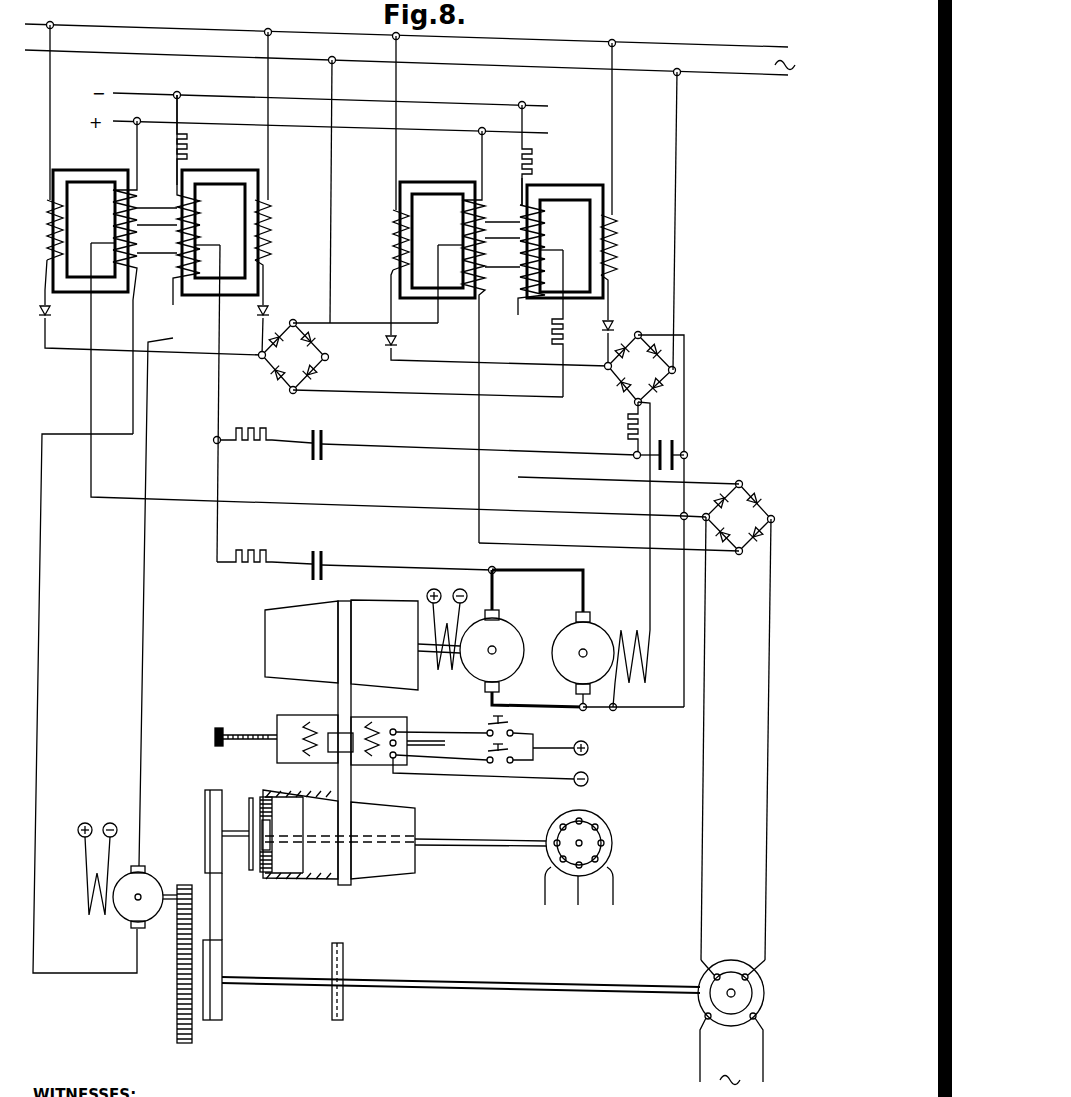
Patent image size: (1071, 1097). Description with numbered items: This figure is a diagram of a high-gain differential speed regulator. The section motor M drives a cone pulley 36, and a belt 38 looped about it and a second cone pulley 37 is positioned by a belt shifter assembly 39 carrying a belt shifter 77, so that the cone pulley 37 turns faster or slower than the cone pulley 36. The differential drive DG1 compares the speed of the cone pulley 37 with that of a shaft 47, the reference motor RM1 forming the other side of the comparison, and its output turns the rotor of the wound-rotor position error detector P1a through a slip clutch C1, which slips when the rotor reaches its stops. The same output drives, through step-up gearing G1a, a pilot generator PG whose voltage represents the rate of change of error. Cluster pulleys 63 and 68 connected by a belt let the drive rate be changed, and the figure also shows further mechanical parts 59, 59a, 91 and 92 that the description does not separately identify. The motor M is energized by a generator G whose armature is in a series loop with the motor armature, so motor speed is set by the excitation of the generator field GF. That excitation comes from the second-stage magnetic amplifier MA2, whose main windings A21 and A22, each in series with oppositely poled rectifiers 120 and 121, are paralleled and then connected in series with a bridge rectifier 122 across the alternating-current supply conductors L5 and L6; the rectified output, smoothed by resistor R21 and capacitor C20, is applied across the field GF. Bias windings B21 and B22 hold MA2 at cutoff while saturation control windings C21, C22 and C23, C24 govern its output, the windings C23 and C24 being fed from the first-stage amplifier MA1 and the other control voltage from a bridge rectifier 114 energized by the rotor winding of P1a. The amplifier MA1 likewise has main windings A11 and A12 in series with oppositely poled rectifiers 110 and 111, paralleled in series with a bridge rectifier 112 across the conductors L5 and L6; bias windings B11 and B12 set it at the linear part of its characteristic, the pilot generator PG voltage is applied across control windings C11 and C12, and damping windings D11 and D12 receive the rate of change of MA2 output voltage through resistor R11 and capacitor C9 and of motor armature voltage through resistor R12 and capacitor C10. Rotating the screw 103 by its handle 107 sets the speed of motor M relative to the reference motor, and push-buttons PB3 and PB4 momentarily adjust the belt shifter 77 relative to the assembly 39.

The cone pulley 36 is at (264, 620).
The cone pulley 37 is at (376, 880).
The belt 38 is at (337, 644).
The belt shifter assembly 39 is at (403, 711).
The shaft 47 is at (290, 830).
The shaft 59 is at (236, 838).
The shaft 59a is at (468, 982).
The pulley 63 is at (204, 803).
The pulley 68 is at (223, 956).
The belt shifter 77 is at (332, 732).
The spring 91 is at (310, 758).
The spring 92 is at (366, 758).
The screw 103 is at (255, 724).
The handle 107 is at (214, 736).
The rectifier 110 is at (266, 314).
The rectifier 111 is at (40, 306).
The bridge rectifier 112 is at (300, 362).
The bridge rectifier 114 is at (744, 516).
The rectifier 120 is at (612, 324).
The rectifier 121 is at (397, 342).
The bridge rectifier 122 is at (624, 367).
The supply conductor L5 is at (211, 30).
The supply conductor L6 is at (211, 58).
The magnetic amplifier MA1 is at (174, 183).
The magnetic amplifier MA2 is at (516, 195).
The main winding A12 is at (46, 232).
The bias winding B12 is at (112, 205).
The damping winding D12 is at (112, 232).
The control winding C12 is at (142, 342).
The control winding C11 is at (176, 268).
The bias winding B11 is at (200, 193).
The damping winding D11 is at (200, 232).
The main winding A11 is at (267, 232).
The main winding A22 is at (392, 234).
The bias winding B22 is at (458, 206).
The control winding C24 is at (458, 236).
The saturation control winding C21 is at (525, 278).
The saturation control winding C22 is at (516, 293).
The bias winding B21 is at (545, 210).
The control winding C23 is at (550, 246).
The main winding A21 is at (611, 238).
The resistor R11 is at (264, 426).
The capacitor C9 is at (308, 413).
The resistor R12 is at (268, 560).
The capacitor C10 is at (308, 536).
The resistor R21 is at (632, 438).
The capacitor C20 is at (661, 442).
The section motor M is at (519, 611).
The generator G is at (615, 613).
The generator field winding GF is at (643, 654).
The differential drive DG1 is at (271, 779).
The push-button PB3 is at (513, 729).
The push-button PB4 is at (487, 756).
The slip clutch C1 is at (343, 952).
The step-up gearing G1a is at (176, 994).
The pilot generator PG is at (145, 876).
The reference motor RM1 is at (633, 829).
The wound rotor machine P1a is at (704, 977).